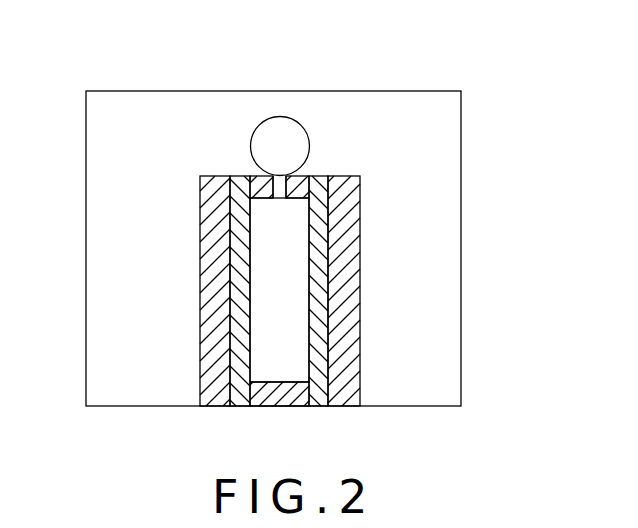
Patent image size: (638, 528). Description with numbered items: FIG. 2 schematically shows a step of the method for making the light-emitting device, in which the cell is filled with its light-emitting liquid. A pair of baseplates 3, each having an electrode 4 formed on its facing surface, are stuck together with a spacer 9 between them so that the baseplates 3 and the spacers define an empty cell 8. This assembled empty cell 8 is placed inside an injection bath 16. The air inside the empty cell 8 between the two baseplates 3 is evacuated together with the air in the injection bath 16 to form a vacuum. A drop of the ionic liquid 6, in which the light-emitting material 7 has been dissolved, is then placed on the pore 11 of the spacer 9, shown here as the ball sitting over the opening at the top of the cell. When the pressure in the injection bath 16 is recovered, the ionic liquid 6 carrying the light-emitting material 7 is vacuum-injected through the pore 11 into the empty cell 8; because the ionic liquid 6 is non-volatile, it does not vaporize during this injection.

The injection bath 16 is at (462, 180).
The baseplate 3 is at (213, 325).
The electrode 4 is at (237, 232).
The spacer 9 is at (261, 180).
The ionic liquid 6 is at (280, 98).
The light-emitting material 7 is at (280, 137).
The pore 11 is at (281, 184).
The empty cell 8 is at (290, 342).